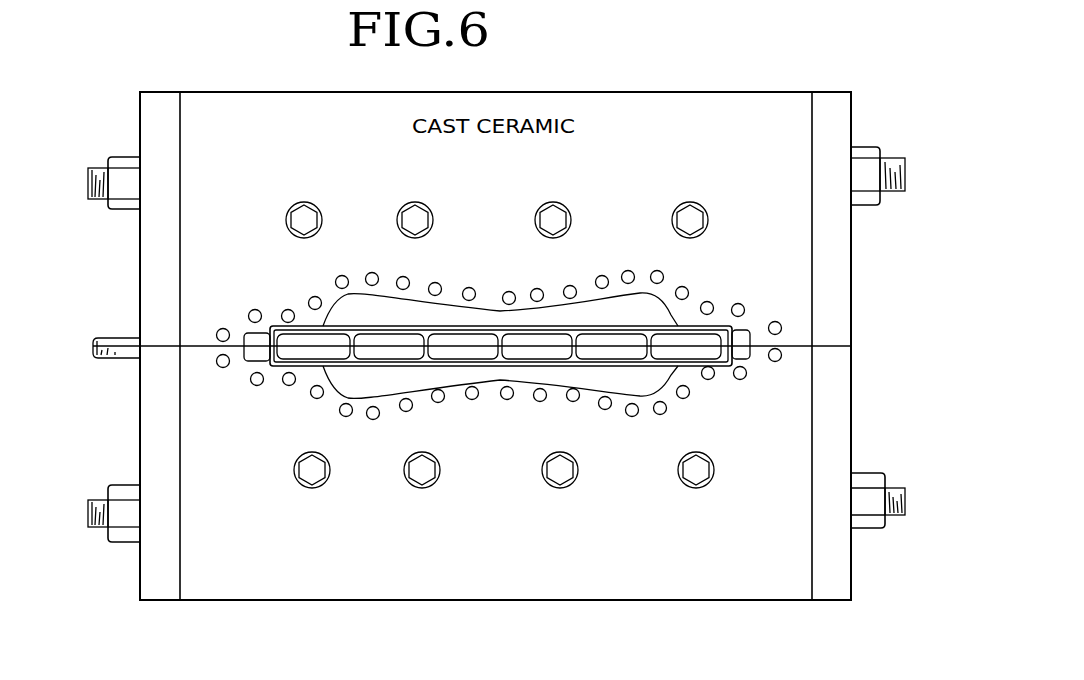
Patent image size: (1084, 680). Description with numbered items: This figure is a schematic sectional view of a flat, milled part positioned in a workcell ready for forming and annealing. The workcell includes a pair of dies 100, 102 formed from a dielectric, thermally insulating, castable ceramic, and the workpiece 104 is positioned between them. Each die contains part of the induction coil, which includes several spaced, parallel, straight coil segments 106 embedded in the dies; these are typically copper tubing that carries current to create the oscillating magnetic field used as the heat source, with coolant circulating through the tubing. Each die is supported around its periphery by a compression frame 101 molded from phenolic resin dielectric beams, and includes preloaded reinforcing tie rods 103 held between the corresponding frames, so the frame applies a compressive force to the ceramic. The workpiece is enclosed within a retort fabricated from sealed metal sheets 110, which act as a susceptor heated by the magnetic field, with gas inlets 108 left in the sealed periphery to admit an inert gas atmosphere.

The die 100 is at (702, 92).
The compression frame 101 is at (140, 575).
The die 102 is at (693, 600).
The tie rod 103 is at (888, 158).
The workpiece 104 is at (368, 357).
The coil segment 106 is at (688, 288).
The gas inlet 108 is at (113, 338).
The sealed metal sheets 110 is at (685, 366).